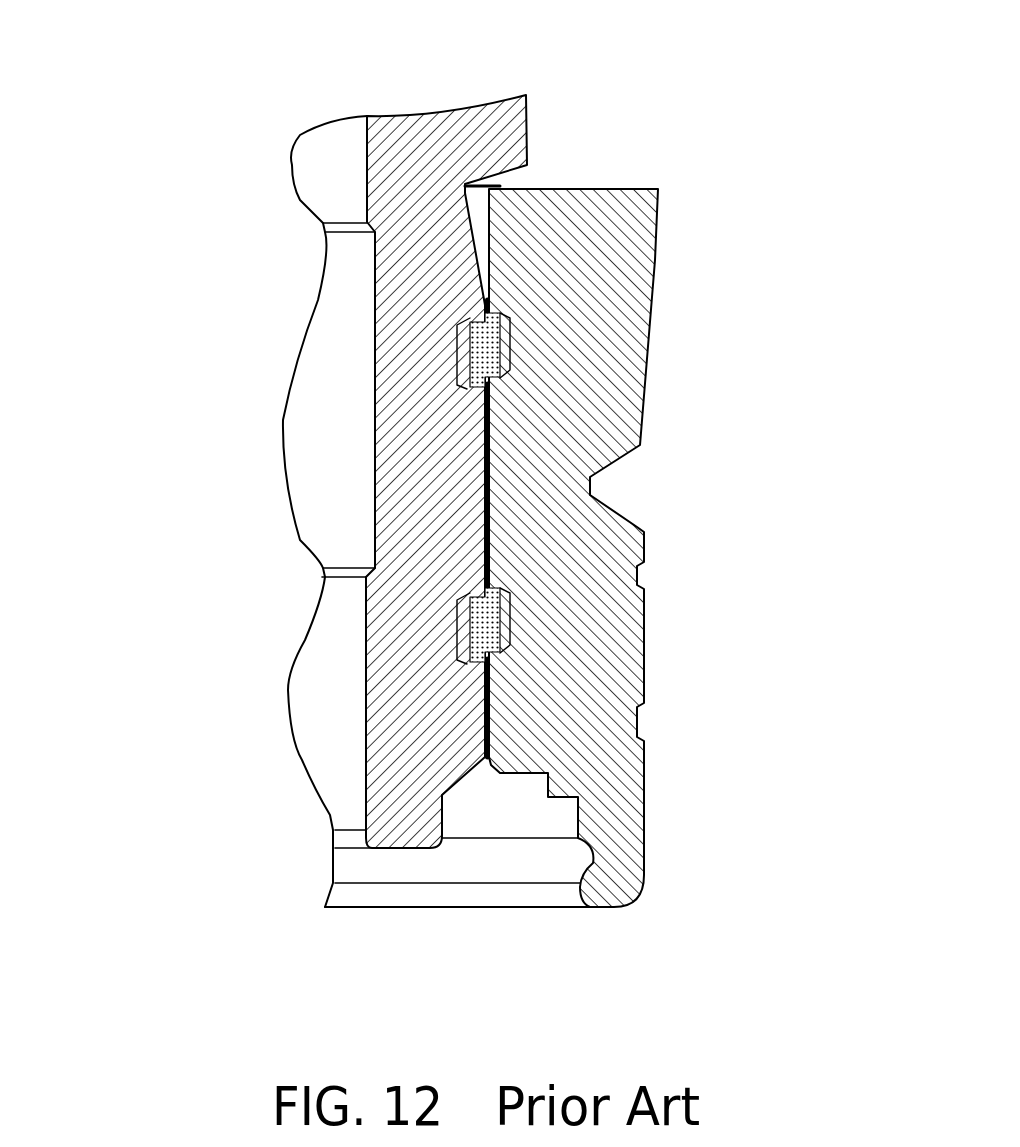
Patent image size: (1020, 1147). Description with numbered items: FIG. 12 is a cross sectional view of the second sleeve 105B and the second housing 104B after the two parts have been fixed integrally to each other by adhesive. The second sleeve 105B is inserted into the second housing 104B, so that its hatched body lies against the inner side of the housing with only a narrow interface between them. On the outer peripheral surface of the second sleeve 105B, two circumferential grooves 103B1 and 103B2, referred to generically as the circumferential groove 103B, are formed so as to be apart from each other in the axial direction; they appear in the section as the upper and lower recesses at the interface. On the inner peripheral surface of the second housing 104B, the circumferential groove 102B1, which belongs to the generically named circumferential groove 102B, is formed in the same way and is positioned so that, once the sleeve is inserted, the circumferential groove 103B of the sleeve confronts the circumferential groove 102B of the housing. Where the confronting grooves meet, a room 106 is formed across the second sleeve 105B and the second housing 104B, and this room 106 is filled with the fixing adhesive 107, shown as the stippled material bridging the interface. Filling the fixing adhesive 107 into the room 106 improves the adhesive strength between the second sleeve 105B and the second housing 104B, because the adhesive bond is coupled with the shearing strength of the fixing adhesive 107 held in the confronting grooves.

The second sleeve 105B is at (426, 140).
The second housing 104B is at (577, 217).
The circumferential groove 103B1 is at (457, 352).
The circumferential groove 103B2 is at (457, 632).
The circumferential groove 103B is at (270, 487).
The circumferential groove 102B1 is at (513, 345).
The circumferential groove 102B is at (701, 479).
The room 106 is at (500, 378).
The fixing adhesive 107 is at (646, 499).